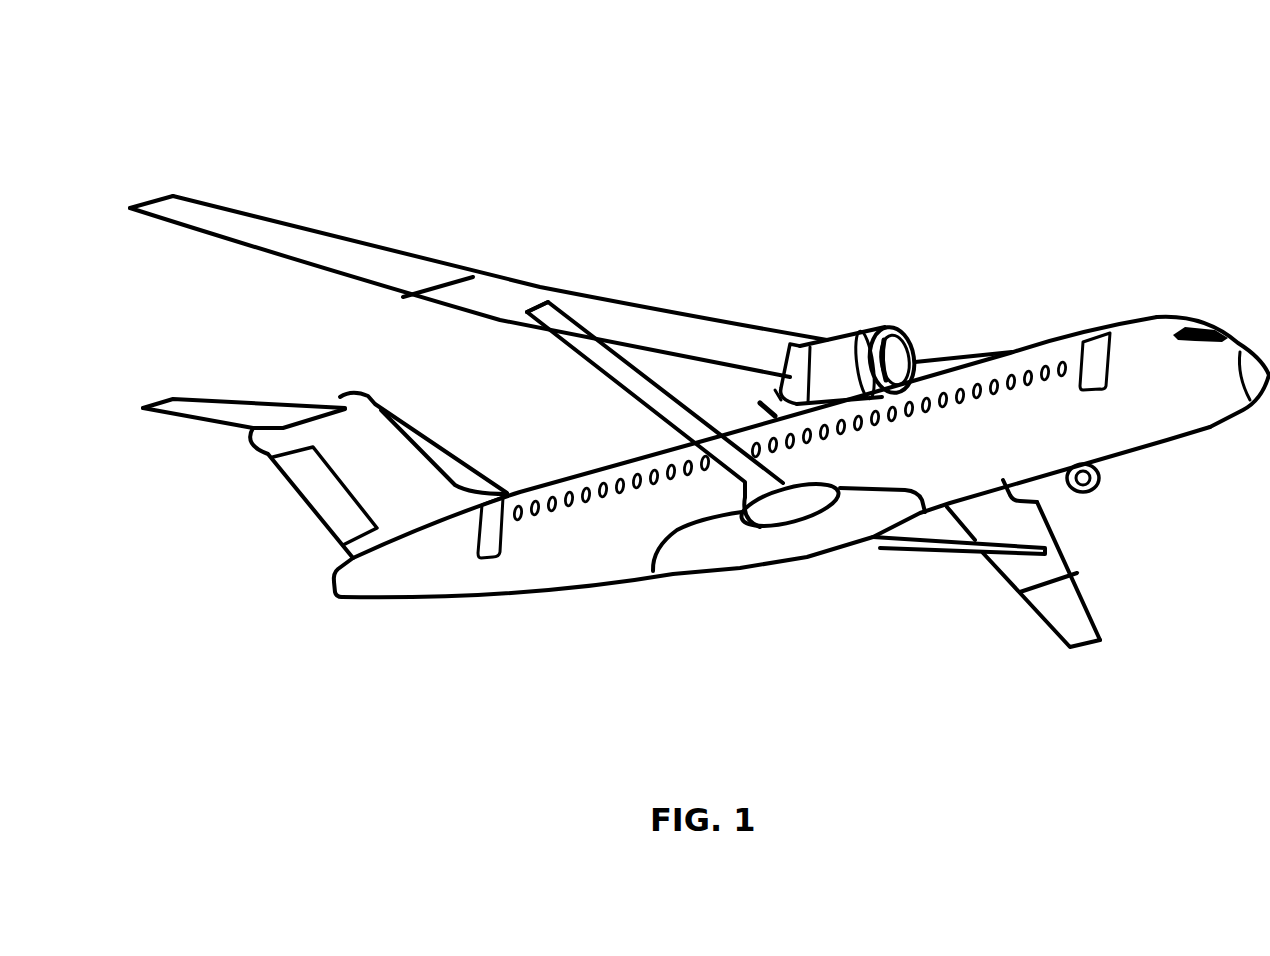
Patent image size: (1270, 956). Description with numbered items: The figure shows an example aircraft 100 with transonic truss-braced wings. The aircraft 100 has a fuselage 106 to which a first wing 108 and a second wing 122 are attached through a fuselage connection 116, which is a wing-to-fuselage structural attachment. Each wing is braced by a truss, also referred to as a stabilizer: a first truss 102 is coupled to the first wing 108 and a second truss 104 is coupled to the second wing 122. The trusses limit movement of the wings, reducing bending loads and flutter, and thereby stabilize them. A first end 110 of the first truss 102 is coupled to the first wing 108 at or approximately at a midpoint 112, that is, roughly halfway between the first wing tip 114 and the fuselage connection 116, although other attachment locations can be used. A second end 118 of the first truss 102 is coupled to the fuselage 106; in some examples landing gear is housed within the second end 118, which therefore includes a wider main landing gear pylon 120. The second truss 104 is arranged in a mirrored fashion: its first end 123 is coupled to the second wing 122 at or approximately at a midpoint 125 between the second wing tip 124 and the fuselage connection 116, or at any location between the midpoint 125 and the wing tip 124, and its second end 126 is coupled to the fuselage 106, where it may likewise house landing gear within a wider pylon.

The aircraft 100 is at (1070, 95).
The first truss 102 is at (632, 378).
The second truss 104 is at (933, 546).
The fuselage 106 is at (707, 497).
The first wing 108 is at (273, 233).
The first end 110 is at (549, 300).
The midpoint 112 is at (526, 333).
The first wing tip 114 is at (141, 196).
The fuselage connection 116 is at (946, 357).
The second end 118 is at (783, 490).
The main landing gear pylon 120 is at (797, 507).
The second wing 122 is at (1072, 573).
The first end 123 is at (1049, 540).
The second wing tip 124 is at (1097, 647).
The midpoint 125 is at (1054, 523).
The second end 126 is at (867, 547).